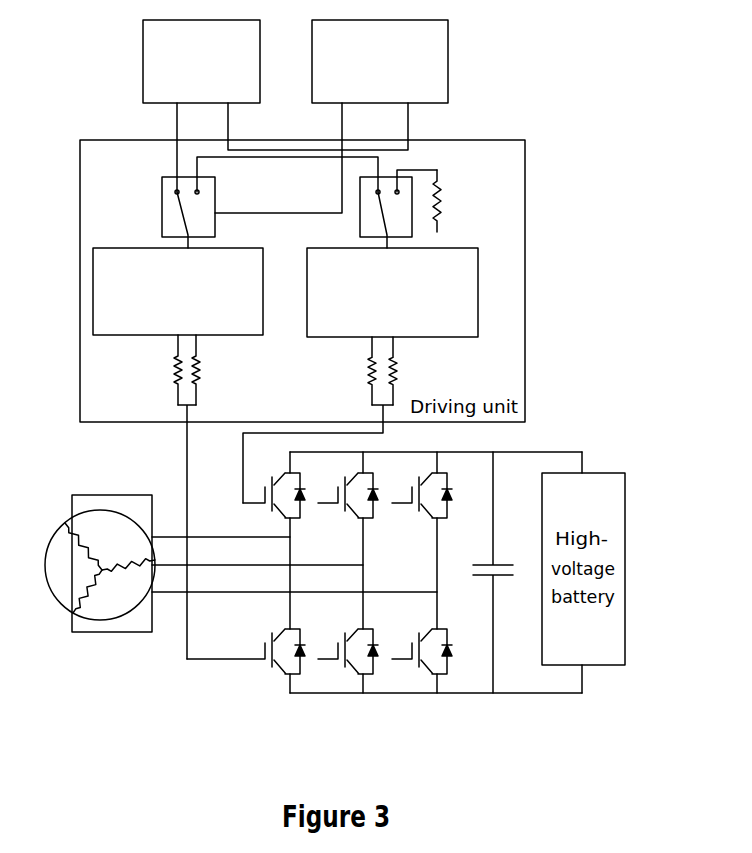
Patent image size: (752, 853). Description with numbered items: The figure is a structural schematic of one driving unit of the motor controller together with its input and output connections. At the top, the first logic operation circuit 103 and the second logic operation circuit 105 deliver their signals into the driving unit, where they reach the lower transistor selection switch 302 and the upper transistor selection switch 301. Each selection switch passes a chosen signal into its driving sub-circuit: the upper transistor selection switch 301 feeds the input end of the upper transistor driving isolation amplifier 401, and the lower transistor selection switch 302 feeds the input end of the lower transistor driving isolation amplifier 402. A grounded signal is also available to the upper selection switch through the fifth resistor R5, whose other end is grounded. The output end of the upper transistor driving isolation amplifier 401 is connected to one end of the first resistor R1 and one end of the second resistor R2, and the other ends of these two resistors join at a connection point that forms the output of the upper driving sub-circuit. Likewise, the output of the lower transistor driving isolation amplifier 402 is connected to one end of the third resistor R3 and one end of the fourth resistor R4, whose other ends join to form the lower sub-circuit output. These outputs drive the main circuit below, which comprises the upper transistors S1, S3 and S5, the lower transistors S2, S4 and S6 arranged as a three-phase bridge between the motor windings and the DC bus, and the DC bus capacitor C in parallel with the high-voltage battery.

The first logic operation circuit 103 is at (260, 68).
The second logic operation circuit 105 is at (448, 68).
The lower transistor selection switch 302 is at (162, 192).
The upper transistor selection switch 301 is at (360, 208).
The lower transistor driving isolation amplifier 402 is at (263, 302).
The upper transistor driving isolation amplifier 401 is at (478, 307).
The first resistor R1 is at (410, 371).
The second resistor R2 is at (356, 371).
The third resistor R3 is at (212, 370).
The fourth resistor R4 is at (161, 370).
The fifth resistor R5 is at (437, 201).
The upper transistor S1 is at (274, 488).
The lower transistor S2 is at (246, 651).
The upper transistor S3 is at (345, 488).
The lower transistor S4 is at (345, 647).
The upper transistor S5 is at (419, 488).
The lower transistor S6 is at (418, 647).
The DC bus capacitor C is at (482, 572).